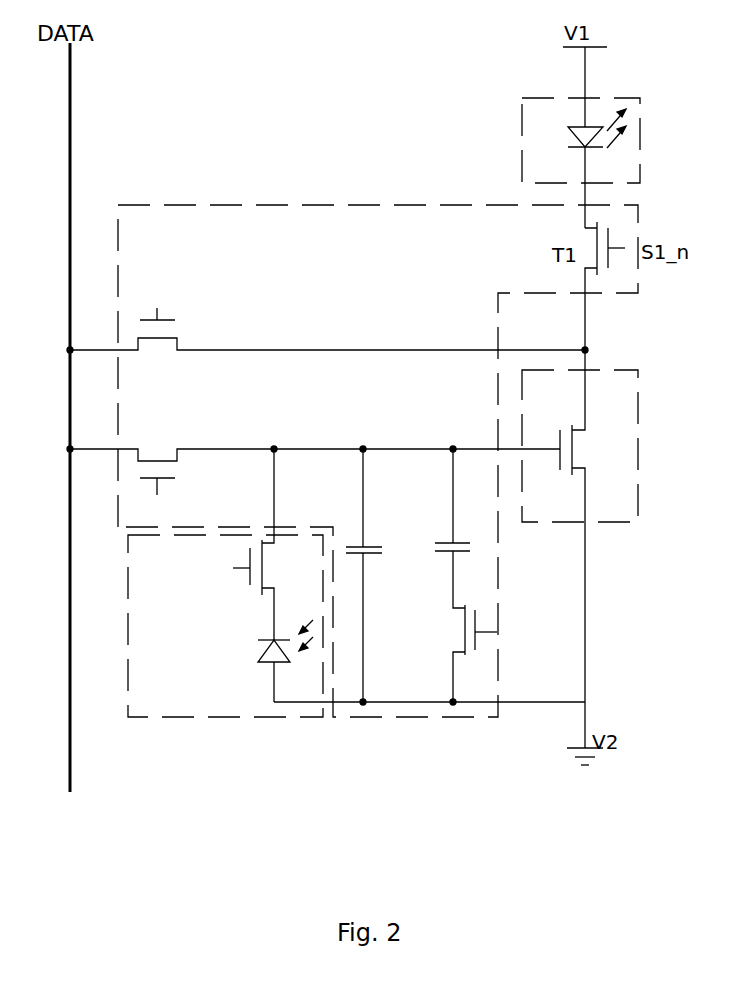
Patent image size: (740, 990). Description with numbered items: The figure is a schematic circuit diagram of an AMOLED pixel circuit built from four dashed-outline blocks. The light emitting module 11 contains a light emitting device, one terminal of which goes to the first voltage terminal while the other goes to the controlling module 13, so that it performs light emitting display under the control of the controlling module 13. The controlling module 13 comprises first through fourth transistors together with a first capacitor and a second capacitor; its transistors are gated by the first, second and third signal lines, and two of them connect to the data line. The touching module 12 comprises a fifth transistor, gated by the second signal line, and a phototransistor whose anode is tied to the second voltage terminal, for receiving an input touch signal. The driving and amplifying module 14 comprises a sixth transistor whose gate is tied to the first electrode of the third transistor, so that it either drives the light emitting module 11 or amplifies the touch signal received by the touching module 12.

The light emitting module 11 is at (532, 148).
The touching module 12 is at (157, 648).
The controlling module 13 is at (292, 217).
The driving and amplifying module 14 is at (613, 413).